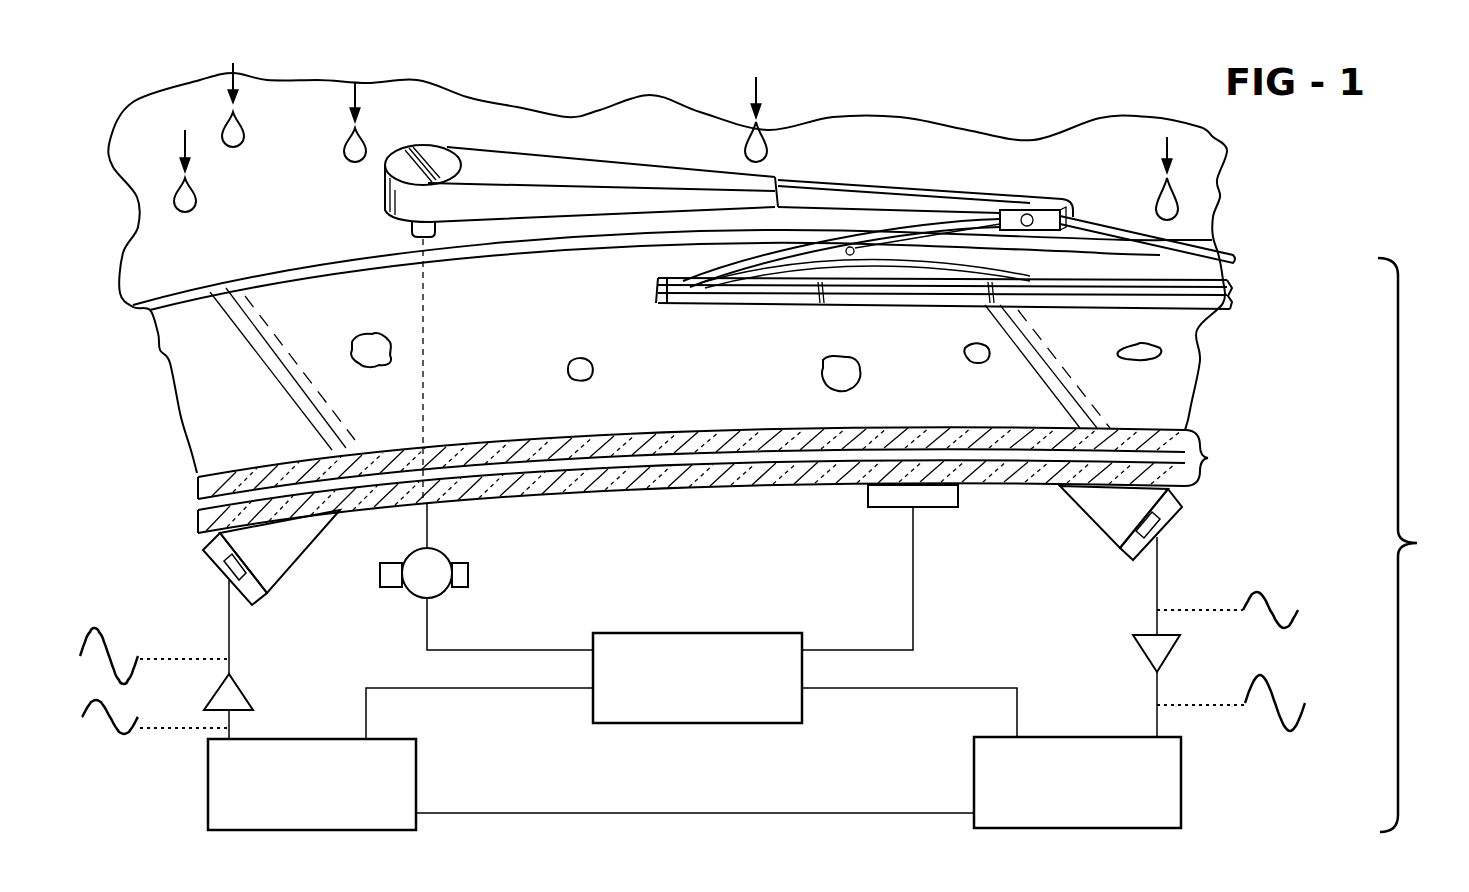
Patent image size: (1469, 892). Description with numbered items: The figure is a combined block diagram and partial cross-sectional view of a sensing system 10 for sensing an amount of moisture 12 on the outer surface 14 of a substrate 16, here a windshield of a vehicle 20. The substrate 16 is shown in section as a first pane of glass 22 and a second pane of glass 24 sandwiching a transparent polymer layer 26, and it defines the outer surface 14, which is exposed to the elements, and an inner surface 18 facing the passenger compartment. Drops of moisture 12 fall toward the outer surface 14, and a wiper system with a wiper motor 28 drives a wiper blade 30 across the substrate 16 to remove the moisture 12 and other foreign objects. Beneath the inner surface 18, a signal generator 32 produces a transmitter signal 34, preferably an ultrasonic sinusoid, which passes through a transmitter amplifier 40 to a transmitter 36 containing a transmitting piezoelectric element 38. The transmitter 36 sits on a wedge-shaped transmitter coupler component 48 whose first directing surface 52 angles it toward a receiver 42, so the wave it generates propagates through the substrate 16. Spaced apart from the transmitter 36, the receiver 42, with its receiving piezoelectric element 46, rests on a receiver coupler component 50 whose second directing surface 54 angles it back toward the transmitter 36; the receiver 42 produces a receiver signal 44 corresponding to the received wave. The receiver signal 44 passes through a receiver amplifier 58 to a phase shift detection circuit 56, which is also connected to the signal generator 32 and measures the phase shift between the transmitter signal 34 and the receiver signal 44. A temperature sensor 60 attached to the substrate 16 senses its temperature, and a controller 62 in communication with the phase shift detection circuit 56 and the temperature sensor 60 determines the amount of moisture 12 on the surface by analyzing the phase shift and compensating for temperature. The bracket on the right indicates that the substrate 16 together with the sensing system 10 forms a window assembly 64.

The sensing system 10 is at (694, 842).
The moisture 12 is at (224, 135).
The outer surface 14 is at (1167, 397).
The substrate 16 is at (706, 493).
The inner surface 18 is at (986, 488).
The vehicle 20 is at (460, 112).
The first pane of glass 22 is at (197, 484).
The second pane of glass 24 is at (197, 527).
The transparent polymer layer 26 is at (197, 504).
The wiper motor 28 is at (414, 599).
The wiper blade 30 is at (680, 302).
The signal generator 32 is at (417, 782).
The transmitter signal 34 is at (80, 655).
The transmitter 36 is at (229, 603).
The transmitting piezoelectric element 38 is at (253, 600).
The transmitter amplifier 40 is at (243, 688).
The receiver 42 is at (1153, 562).
The receiver signal 44 is at (1260, 595).
The receiving piezoelectric element 46 is at (1130, 562).
The transmitter coupler component 48 is at (300, 548).
The receiver coupler component 50 is at (1078, 518).
The first directing surface 52 is at (235, 540).
The second directing surface 54 is at (1112, 528).
The phase shift detection circuit 56 is at (1182, 788).
The receiver amplifier 58 is at (1177, 642).
The temperature sensor 60 is at (887, 509).
The controller 62 is at (699, 723).
The window assembly 64 is at (1415, 545).